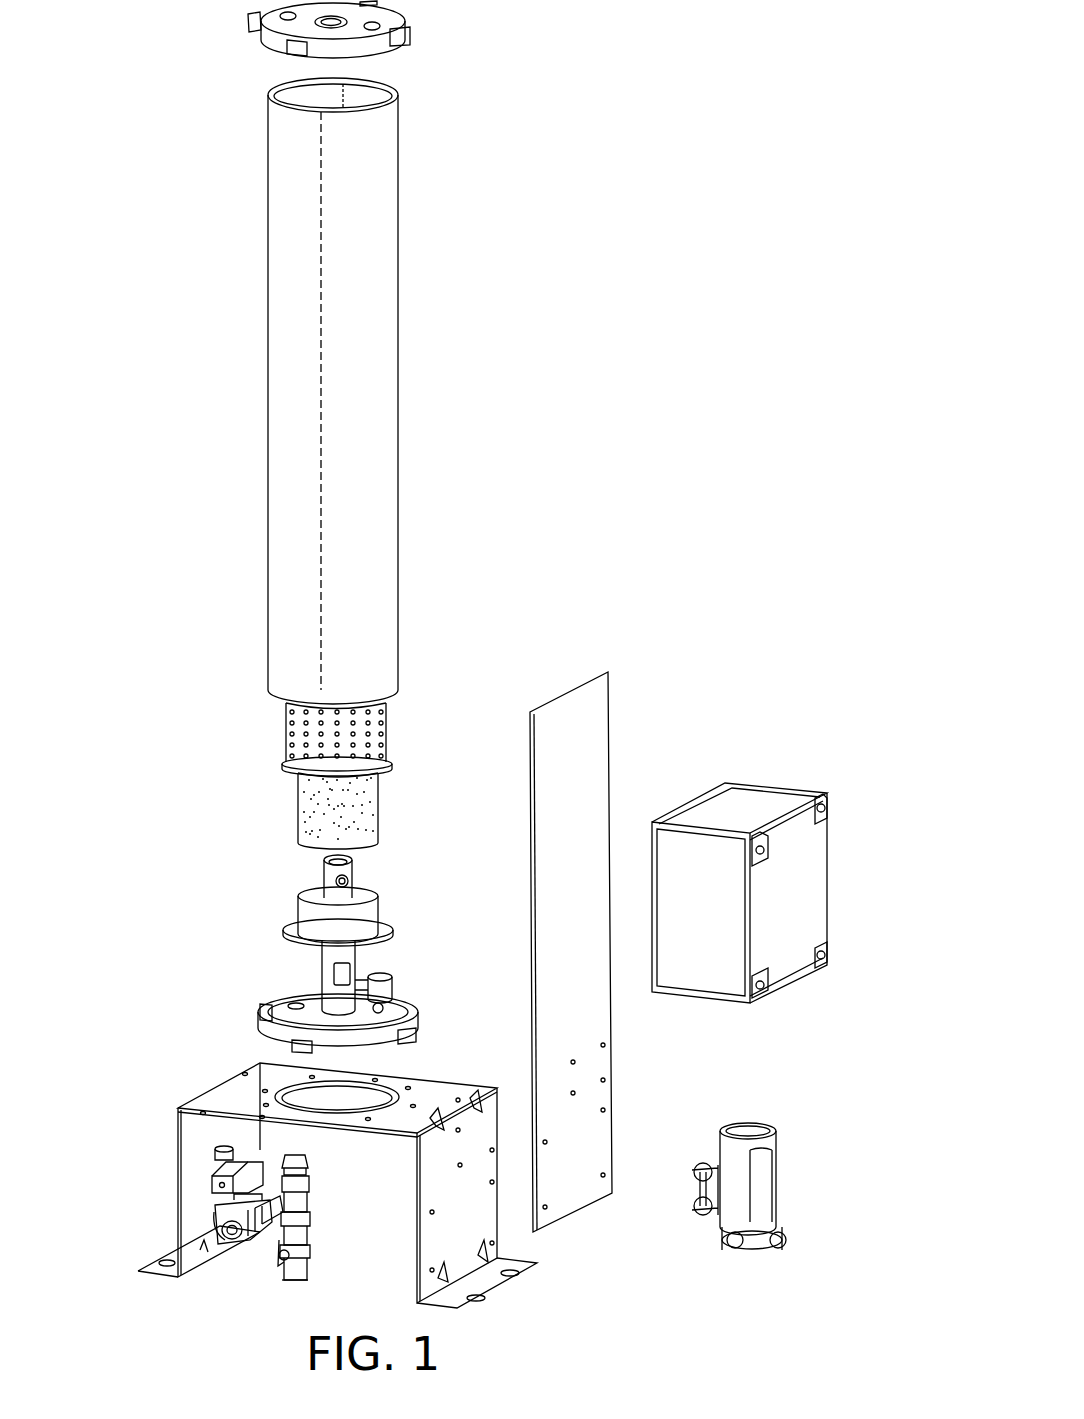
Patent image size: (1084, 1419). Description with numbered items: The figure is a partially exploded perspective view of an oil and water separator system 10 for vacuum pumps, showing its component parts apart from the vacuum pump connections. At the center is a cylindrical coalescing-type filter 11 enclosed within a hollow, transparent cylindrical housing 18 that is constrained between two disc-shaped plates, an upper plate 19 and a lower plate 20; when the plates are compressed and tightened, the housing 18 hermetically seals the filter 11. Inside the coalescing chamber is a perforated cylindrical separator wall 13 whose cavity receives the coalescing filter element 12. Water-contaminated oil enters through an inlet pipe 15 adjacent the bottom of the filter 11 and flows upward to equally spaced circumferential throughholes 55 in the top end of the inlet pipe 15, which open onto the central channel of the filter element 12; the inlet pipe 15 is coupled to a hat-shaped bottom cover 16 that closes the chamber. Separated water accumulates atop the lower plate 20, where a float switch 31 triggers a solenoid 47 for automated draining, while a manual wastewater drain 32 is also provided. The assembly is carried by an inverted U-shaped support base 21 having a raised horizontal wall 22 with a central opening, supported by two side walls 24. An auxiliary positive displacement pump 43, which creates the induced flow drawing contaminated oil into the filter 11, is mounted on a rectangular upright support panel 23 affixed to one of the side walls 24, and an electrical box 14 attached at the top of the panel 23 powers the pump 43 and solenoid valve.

The oil and water separator system 10 is at (592, 404).
The upper plate 19 is at (393, 14).
The housing 18 is at (378, 214).
The filter 11 is at (343, 758).
The separator wall 13 is at (300, 722).
The filter element 12 is at (300, 811).
The inlet pipe 15 is at (325, 868).
The throughholes 55 is at (325, 878).
The bottom cover 16 is at (307, 927).
The float switch 31 is at (385, 987).
The lower plate 20 is at (285, 1034).
The support base 21 is at (356, 1160).
The raised horizontal wall 22 is at (440, 1100).
The side walls 24 is at (195, 1142).
The solenoid 47 is at (210, 1183).
The wastewater drain 32 is at (278, 1280).
The upright support panel 23 is at (598, 742).
The electrical box 14 is at (800, 886).
The auxiliary positive displacement pump 43 is at (757, 1183).